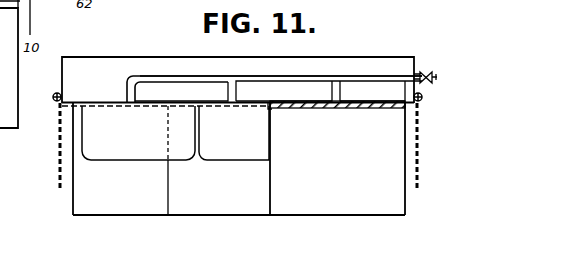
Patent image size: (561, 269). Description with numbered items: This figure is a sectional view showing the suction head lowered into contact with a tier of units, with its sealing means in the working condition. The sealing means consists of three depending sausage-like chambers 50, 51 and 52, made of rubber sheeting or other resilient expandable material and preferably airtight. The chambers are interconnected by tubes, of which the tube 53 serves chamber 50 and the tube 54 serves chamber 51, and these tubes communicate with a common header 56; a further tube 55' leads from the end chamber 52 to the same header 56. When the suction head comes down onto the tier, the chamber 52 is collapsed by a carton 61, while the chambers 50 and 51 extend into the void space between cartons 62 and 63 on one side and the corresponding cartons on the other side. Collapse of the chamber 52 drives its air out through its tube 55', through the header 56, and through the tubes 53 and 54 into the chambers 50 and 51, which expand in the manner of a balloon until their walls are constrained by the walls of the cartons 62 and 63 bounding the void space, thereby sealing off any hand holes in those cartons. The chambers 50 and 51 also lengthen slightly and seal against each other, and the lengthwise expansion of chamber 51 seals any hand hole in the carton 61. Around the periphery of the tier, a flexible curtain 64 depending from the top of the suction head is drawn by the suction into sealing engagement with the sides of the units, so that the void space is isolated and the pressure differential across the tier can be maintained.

The chamber 50 is at (108, 155).
The chamber 51 is at (247, 150).
The chamber 52 is at (373, 102).
The tube 53 is at (126, 85).
The tube 54 is at (230, 100).
The ledge 55' is at (292, 121).
The common header 56 is at (178, 77).
The carton 61 is at (373, 203).
The carton 62 is at (97, 205).
The carton 63 is at (223, 200).
The flexible curtain 64 is at (58, 172).